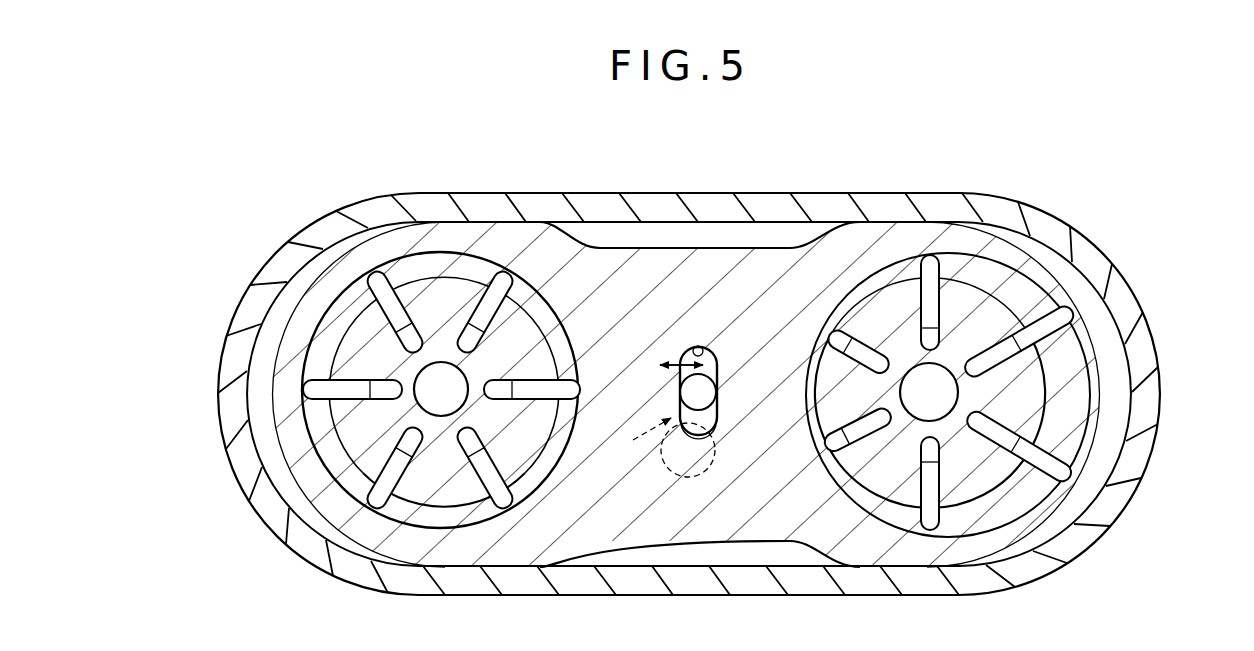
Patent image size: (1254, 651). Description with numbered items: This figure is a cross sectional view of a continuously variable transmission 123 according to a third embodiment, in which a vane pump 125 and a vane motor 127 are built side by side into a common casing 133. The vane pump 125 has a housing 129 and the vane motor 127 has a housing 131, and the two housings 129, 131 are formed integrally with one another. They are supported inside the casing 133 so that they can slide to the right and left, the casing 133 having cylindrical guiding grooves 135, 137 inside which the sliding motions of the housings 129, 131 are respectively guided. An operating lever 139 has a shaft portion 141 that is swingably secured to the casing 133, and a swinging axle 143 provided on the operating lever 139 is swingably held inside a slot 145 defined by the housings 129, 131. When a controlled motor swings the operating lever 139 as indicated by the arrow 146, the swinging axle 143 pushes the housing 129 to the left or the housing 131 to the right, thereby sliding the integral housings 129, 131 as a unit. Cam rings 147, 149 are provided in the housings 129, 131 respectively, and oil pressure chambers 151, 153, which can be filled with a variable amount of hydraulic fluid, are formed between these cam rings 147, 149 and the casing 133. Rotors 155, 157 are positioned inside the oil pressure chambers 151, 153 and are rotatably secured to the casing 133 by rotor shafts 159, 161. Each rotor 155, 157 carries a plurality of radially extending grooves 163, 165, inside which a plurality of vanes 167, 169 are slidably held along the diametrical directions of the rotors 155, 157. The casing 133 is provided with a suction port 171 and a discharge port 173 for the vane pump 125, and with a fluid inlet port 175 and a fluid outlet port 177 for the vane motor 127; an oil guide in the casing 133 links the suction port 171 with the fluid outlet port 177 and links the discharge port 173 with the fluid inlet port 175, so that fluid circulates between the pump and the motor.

The continuously variable transmission 123 is at (330, 160).
The vane pump 125 is at (403, 188).
The vane motor 127 is at (1030, 188).
The housing 129 is at (292, 288).
The housing 131 is at (1126, 326).
The casing 133 is at (722, 207).
The cylindrical guiding groove 135 is at (478, 220).
The cylindrical guiding groove 137 is at (928, 220).
The operating lever 139 is at (629, 443).
The shaft portion 141 is at (714, 462).
The swinging axle 143 is at (716, 392).
The slot 145 is at (708, 348).
The arrow 146 is at (676, 362).
The cam ring 147 is at (316, 347).
The cam ring 149 is at (900, 274).
The oil pressure chamber 151 is at (320, 447).
The oil pressure chamber 153 is at (1050, 403).
The rotor 155 is at (343, 438).
The rotor 157 is at (941, 471).
The rotor shaft 159 is at (445, 405).
The rotor shaft 161 is at (922, 410).
The radially extending groove 163 is at (468, 344).
The radially extending groove 165 is at (1000, 354).
The vane 167 is at (488, 443).
The vane 169 is at (866, 356).
The suction port 171 is at (418, 535).
The discharge port 173 is at (418, 280).
The fluid inlet port 175 is at (978, 291).
The fluid outlet port 177 is at (988, 516).